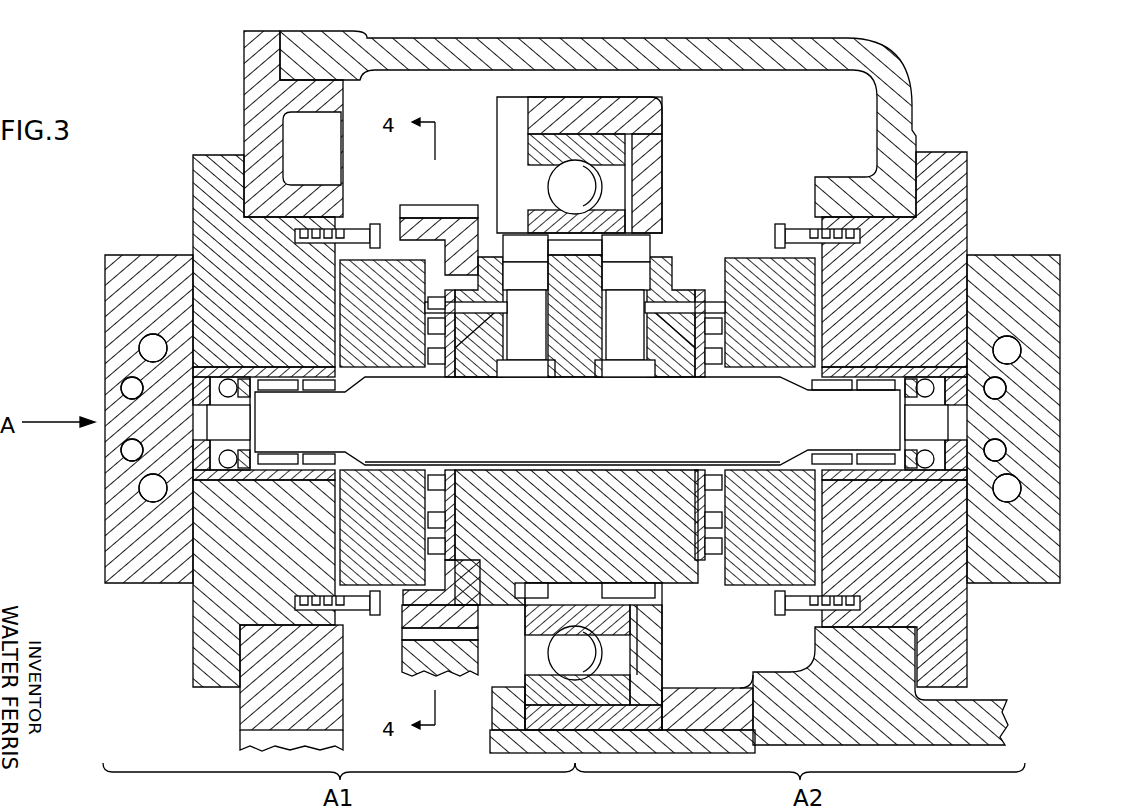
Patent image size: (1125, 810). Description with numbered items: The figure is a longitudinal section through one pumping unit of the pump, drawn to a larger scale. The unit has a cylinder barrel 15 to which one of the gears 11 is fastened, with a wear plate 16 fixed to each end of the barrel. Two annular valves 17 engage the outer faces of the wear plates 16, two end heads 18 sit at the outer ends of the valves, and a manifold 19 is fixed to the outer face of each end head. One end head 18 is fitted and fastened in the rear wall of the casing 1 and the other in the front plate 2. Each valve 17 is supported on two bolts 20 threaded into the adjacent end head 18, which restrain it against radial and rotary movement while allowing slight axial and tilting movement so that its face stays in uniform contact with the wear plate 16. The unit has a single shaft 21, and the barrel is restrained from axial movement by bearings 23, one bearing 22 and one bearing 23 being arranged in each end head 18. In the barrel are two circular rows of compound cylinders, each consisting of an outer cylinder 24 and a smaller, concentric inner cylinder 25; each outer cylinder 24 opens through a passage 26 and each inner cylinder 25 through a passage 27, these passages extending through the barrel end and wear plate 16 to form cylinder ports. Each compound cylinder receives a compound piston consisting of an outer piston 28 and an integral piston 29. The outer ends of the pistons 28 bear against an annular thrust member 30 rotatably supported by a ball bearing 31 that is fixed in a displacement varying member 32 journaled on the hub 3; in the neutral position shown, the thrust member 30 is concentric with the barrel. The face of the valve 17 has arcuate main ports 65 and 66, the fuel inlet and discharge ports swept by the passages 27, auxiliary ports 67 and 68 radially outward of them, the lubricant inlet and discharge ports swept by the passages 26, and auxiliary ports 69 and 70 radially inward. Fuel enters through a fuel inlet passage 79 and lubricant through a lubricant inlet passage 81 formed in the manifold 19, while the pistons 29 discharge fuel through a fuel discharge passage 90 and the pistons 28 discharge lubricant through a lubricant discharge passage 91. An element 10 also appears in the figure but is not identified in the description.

The casing 1 is at (885, 58).
The front plate 2 is at (258, 73).
The hub 3 is at (505, 740).
The lower housing member 10 is at (418, 672).
The gear 11 is at (442, 212).
The cylinder barrel 15 is at (555, 485).
The wear plate 16 is at (446, 478).
The annular valve 17 is at (346, 472).
The end head 18 is at (212, 637).
The manifold 19 is at (122, 528).
The bolt 20 is at (390, 214).
The shaft 21 is at (588, 431).
The bearing 22 is at (325, 392).
The bearing 23 is at (228, 398).
The outer cylinder 24 is at (600, 307).
The inner cylinder 25 is at (602, 340).
The passage 26 is at (576, 276).
The passage 27 is at (482, 372).
The outer piston 28 is at (537, 259).
The piston 29 is at (537, 333).
The annular thrust member 30 is at (548, 222).
The ball bearing 31 is at (568, 185).
The displacement varying member 32 is at (652, 140).
The arcuate main port 65 is at (430, 326).
The arcuate main port 66 is at (430, 520).
The arcuate auxiliary port 67 is at (430, 305).
The arcuate auxiliary port 68 is at (430, 546).
The arcuate auxiliary port 69 is at (432, 366).
The arcuate auxiliary port 70 is at (430, 476).
The fuel inlet passage 79 is at (150, 348).
The lubricant inlet passage 81 is at (130, 388).
The fuel discharge passage 90 is at (150, 488).
The lubricant discharge passage 91 is at (130, 450).